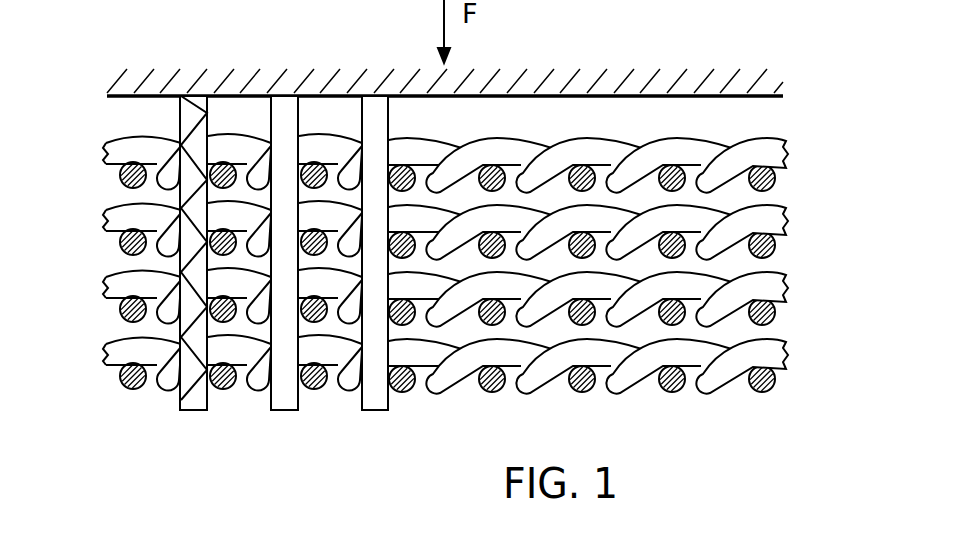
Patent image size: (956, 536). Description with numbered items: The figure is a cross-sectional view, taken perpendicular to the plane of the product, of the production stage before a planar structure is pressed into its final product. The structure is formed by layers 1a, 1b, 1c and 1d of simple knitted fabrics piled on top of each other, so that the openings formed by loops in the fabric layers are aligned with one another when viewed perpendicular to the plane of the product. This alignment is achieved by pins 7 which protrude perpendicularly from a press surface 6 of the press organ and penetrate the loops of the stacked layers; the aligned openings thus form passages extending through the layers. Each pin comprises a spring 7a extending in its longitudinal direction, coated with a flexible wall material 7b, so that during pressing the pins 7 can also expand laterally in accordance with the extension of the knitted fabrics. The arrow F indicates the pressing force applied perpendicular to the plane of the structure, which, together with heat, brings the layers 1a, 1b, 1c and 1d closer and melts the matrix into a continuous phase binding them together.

The layer 1a is at (803, 172).
The layer 1b is at (803, 239).
The layer 1c is at (803, 306).
The layer 1d is at (803, 373).
The press surface 6 is at (745, 98).
The pins 7 is at (375, 440).
The spring 7a is at (181, 124).
The flexible wall material 7b is at (180, 402).